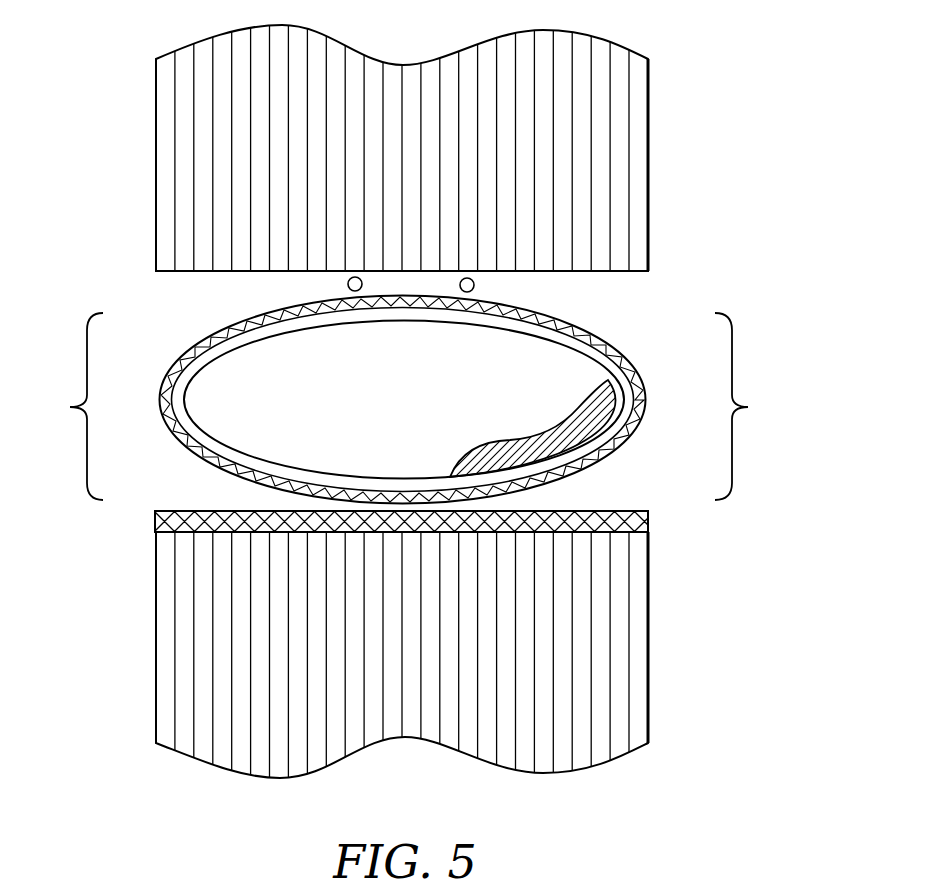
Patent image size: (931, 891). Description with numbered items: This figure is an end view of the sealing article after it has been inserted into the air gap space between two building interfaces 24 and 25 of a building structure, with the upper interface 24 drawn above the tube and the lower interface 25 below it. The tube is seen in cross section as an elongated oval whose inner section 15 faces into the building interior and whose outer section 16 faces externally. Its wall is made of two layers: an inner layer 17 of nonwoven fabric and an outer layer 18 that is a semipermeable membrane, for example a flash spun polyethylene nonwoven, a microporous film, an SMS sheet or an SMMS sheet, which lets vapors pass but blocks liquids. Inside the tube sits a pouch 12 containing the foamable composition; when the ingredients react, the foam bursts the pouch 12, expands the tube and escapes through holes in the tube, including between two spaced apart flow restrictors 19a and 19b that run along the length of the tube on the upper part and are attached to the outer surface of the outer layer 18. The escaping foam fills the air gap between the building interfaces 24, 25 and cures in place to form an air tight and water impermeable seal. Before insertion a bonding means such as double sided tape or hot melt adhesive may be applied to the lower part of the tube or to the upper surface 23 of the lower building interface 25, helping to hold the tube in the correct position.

The pouch 12 is at (568, 437).
The inner section 15 is at (750, 406).
The outer section 16 is at (71, 406).
The inner layer 17 is at (210, 347).
The outer layer 18 is at (607, 337).
The flow restrictor 19a is at (347, 284).
The flow restrictor 19b is at (475, 283).
The upper surface of the building interface 23 is at (642, 525).
The building interface 24 is at (640, 87).
The building interface 25 is at (640, 623).